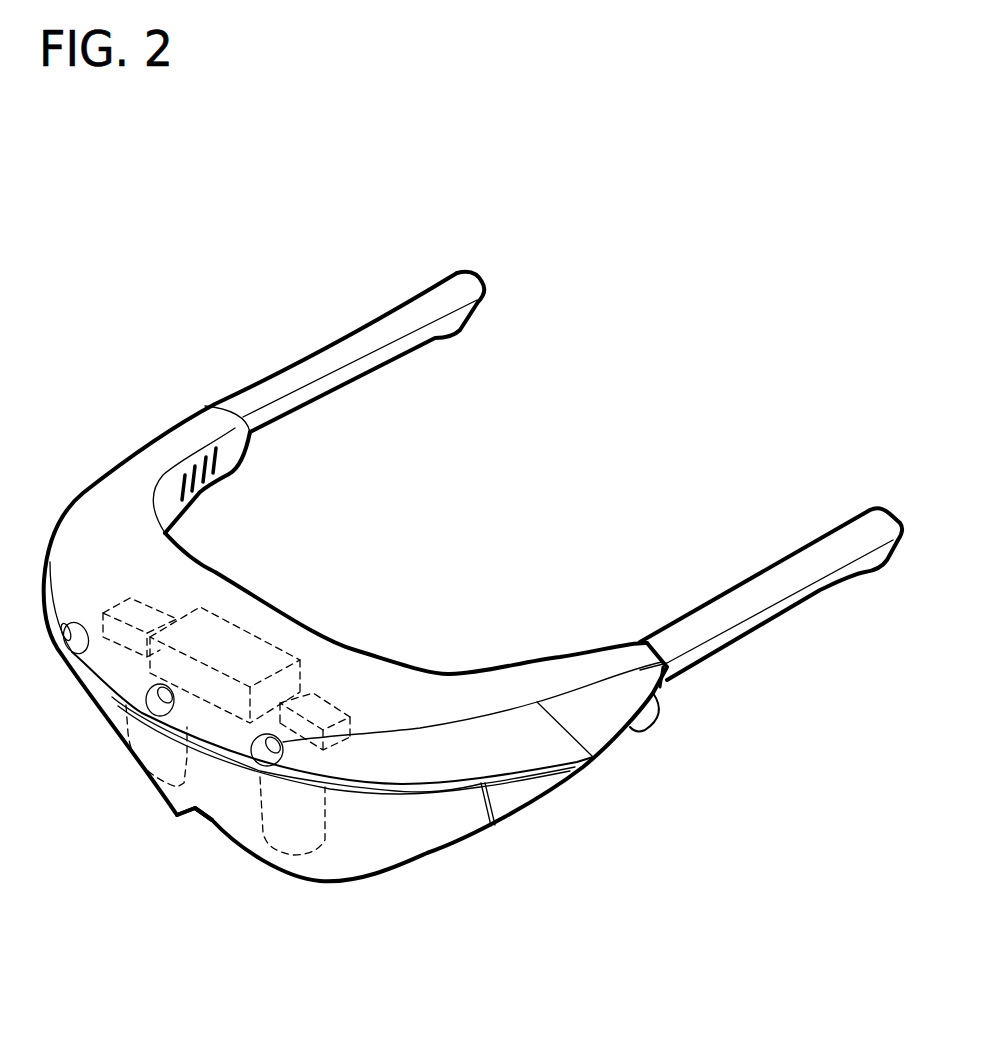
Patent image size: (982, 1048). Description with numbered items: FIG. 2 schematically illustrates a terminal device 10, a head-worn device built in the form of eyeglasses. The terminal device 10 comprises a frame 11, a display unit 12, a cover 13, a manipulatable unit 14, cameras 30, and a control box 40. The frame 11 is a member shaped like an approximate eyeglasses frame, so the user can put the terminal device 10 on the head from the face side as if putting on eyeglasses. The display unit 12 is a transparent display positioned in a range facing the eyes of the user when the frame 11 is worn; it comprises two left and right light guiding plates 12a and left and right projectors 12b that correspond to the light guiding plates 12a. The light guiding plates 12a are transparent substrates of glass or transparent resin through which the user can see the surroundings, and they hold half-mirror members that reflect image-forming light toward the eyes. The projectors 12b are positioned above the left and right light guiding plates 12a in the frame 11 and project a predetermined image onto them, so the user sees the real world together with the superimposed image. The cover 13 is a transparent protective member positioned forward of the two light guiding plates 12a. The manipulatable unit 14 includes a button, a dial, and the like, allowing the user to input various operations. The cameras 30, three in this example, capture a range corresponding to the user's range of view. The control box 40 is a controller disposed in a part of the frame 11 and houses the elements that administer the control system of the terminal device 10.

The terminal device 10 is at (176, 333).
The frame 11 is at (122, 470).
The display unit 12 is at (270, 720).
The light guiding plates 12a is at (140, 765).
The projectors 12b is at (168, 614).
The cover 13 is at (207, 798).
The manipulatable unit 14 is at (650, 714).
The cameras 30 is at (80, 626).
The control box 40 is at (265, 628).